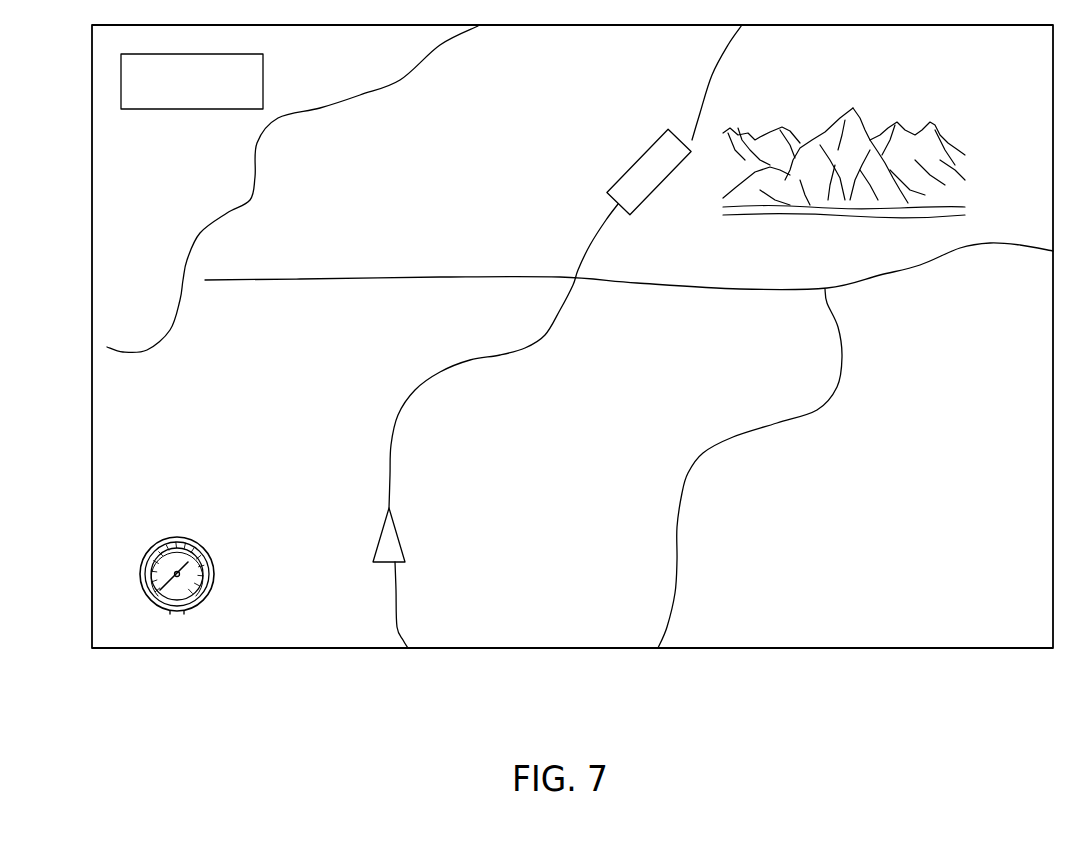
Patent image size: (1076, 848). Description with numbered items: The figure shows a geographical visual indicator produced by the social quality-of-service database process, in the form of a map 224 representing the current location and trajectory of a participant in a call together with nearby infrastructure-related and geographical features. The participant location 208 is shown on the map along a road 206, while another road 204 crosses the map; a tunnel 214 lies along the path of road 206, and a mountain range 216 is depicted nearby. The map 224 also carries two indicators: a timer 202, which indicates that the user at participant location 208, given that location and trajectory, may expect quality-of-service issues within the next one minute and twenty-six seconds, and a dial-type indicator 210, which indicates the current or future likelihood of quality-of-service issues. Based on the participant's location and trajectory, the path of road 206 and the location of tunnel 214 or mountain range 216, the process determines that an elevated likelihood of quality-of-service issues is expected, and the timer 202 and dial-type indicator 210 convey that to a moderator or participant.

The timer 202 is at (233, 107).
The road 204 is at (400, 272).
The road 206 is at (392, 413).
The participant location 208 is at (372, 558).
The dial-type indicator 210 is at (213, 562).
The tunnel 214 is at (625, 170).
The mountain range 216 is at (766, 230).
The map 224 is at (90, 107).